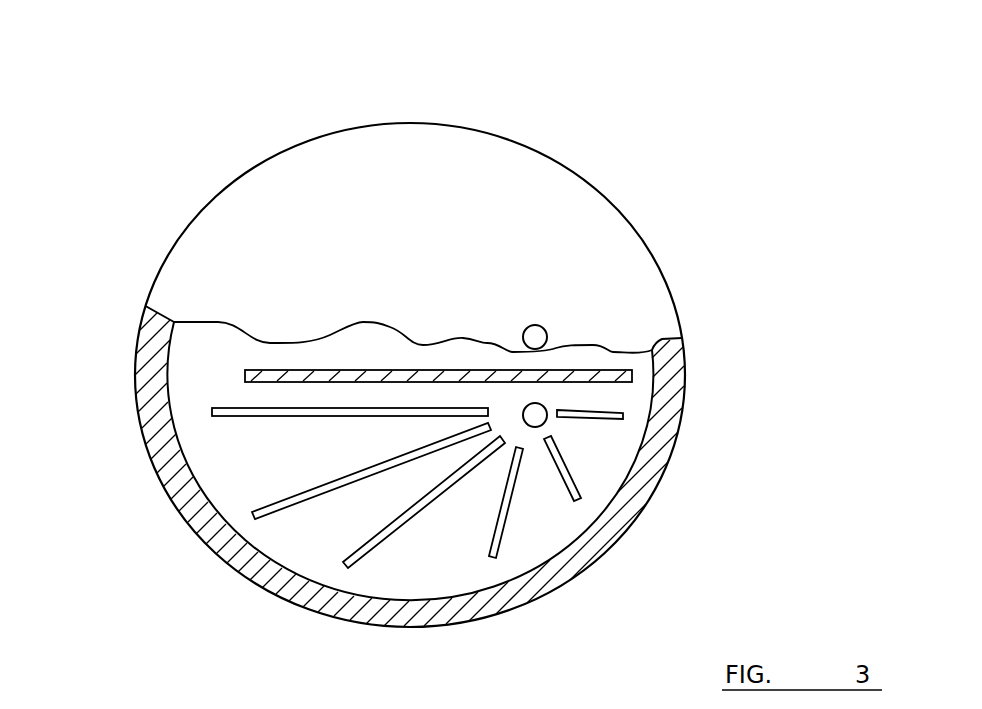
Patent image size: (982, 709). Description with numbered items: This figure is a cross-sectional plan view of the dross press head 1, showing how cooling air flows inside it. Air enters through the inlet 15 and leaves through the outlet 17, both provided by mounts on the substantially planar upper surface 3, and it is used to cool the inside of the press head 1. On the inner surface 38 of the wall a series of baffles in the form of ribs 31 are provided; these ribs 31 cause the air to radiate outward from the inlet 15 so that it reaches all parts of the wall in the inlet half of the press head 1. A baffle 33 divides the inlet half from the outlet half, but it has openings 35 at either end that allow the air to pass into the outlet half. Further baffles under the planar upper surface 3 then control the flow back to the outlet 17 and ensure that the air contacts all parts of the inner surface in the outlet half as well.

The press head 1 is at (622, 202).
The upper surface 3 is at (322, 193).
The inlet 15 is at (535, 415).
The outlet 17 is at (535, 337).
The ribs 31 is at (252, 417).
The baffle 33 is at (305, 372).
The openings 35 is at (205, 377).
The inner surface 38 is at (325, 535).